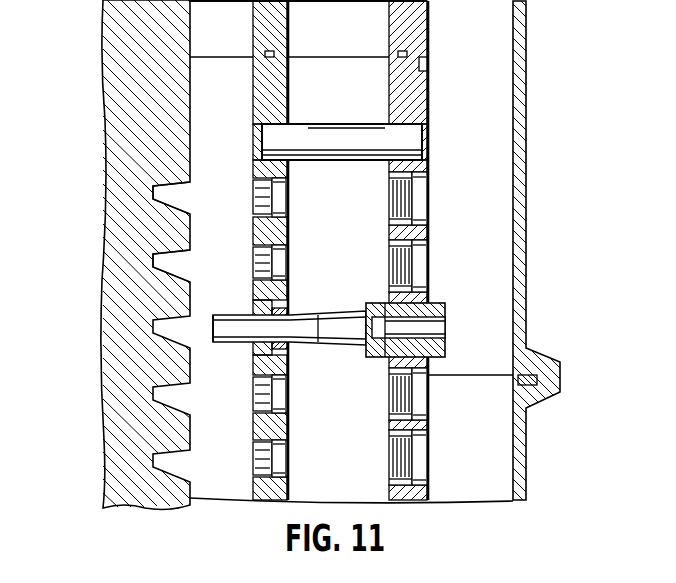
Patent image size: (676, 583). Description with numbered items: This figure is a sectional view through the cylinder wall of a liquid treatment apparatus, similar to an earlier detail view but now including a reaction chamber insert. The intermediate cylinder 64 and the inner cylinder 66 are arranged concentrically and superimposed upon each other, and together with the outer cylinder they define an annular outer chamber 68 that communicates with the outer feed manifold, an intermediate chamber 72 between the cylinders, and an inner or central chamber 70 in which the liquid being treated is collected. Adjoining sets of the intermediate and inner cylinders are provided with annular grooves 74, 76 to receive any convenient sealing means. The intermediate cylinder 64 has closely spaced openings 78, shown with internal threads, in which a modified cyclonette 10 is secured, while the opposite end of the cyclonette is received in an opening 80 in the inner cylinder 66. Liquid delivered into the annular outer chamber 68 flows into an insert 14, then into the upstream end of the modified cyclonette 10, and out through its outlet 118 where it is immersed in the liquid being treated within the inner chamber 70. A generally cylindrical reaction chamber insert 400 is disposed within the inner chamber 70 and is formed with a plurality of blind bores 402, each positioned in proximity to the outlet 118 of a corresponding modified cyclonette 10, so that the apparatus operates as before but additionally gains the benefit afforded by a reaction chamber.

The reaction chamber insert 400 is at (103, 94).
The blind bores 402 is at (172, 212).
The outlet 118 is at (213, 330).
The openings 80 is at (262, 201).
The annular groove 76 is at (270, 50).
The annular groove 74 is at (406, 50).
The inner cylinder 66 is at (291, 96).
The intermediate cylinder 64 is at (430, 96).
The openings 78 is at (405, 203).
The modified cyclonette 10 is at (346, 310).
The insert 14 is at (454, 327).
The inner or central chamber 70 is at (224, 421).
The intermediate chamber 72 is at (349, 421).
The annular outer chamber 68 is at (481, 426).